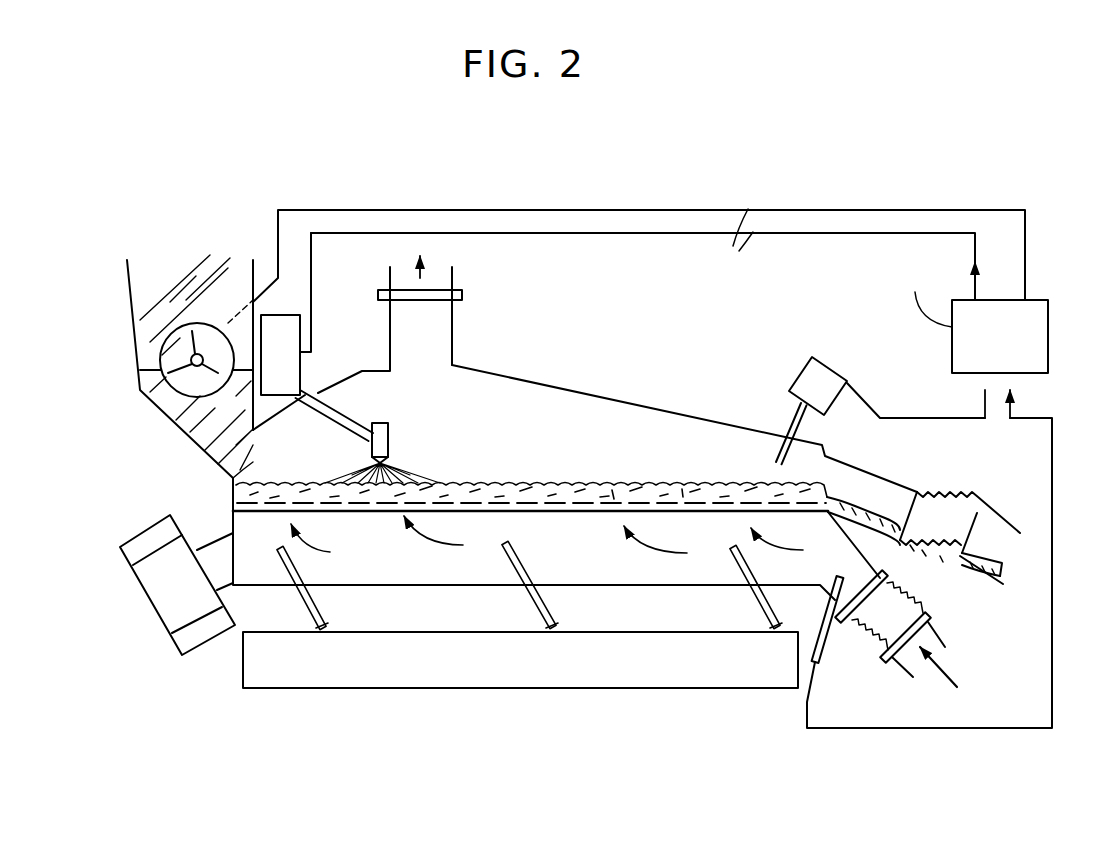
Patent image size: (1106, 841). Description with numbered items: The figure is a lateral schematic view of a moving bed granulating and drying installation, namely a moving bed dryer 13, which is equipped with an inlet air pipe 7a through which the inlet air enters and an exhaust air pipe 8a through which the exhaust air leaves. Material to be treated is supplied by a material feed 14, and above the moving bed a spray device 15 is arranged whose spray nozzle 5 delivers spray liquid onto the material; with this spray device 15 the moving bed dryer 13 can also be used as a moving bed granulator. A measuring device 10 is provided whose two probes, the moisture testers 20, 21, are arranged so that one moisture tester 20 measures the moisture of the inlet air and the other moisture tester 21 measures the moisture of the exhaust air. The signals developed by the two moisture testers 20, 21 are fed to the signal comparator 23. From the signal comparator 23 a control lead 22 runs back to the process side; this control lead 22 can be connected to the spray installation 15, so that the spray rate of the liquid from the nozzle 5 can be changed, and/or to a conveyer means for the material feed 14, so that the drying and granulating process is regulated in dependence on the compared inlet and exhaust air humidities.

The material feed 14 is at (127, 382).
The spray device 15 is at (313, 368).
The spray nozzle 5 is at (391, 438).
The exhaust air pipe 8a is at (466, 325).
The moving bed dryer 13 is at (648, 386).
The control lead 22 is at (639, 255).
The signal comparator 23 is at (1046, 320).
The moisture tester 21 is at (808, 383).
The measuring device 10 is at (914, 429).
The moisture tester 20 is at (832, 610).
The inlet air pipe 7a is at (858, 640).